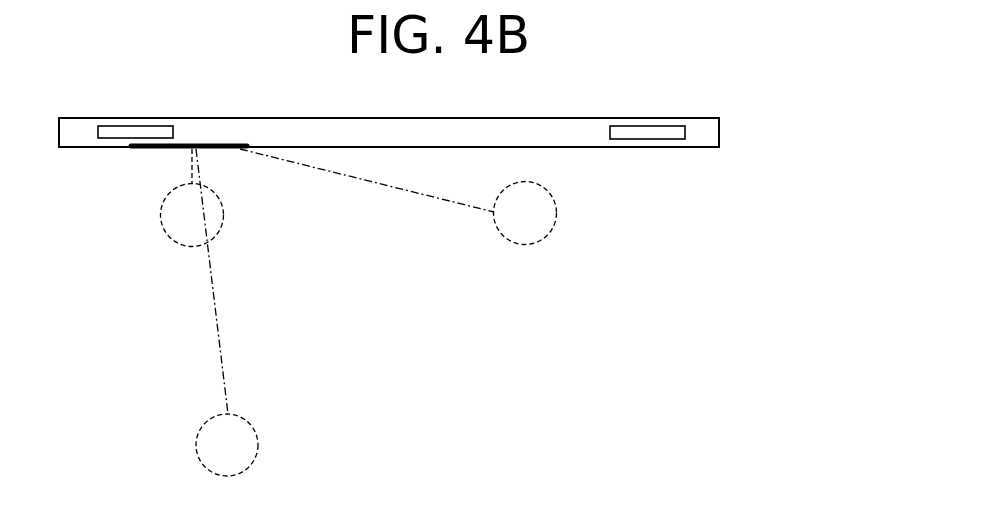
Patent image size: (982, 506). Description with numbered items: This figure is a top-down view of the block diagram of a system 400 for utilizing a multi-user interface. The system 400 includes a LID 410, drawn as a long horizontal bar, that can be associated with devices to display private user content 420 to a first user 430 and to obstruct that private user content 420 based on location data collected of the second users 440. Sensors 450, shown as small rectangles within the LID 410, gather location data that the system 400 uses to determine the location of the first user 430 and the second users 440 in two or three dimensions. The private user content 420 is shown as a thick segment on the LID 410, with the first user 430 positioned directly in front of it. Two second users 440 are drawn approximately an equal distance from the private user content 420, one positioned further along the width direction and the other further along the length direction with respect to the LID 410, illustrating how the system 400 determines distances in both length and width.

The system 400 is at (765, 191).
The LID 410 is at (721, 127).
The private user content 420 is at (172, 144).
The first user 430 is at (222, 217).
The second user 440 is at (557, 215).
The sensors 450 is at (130, 126).